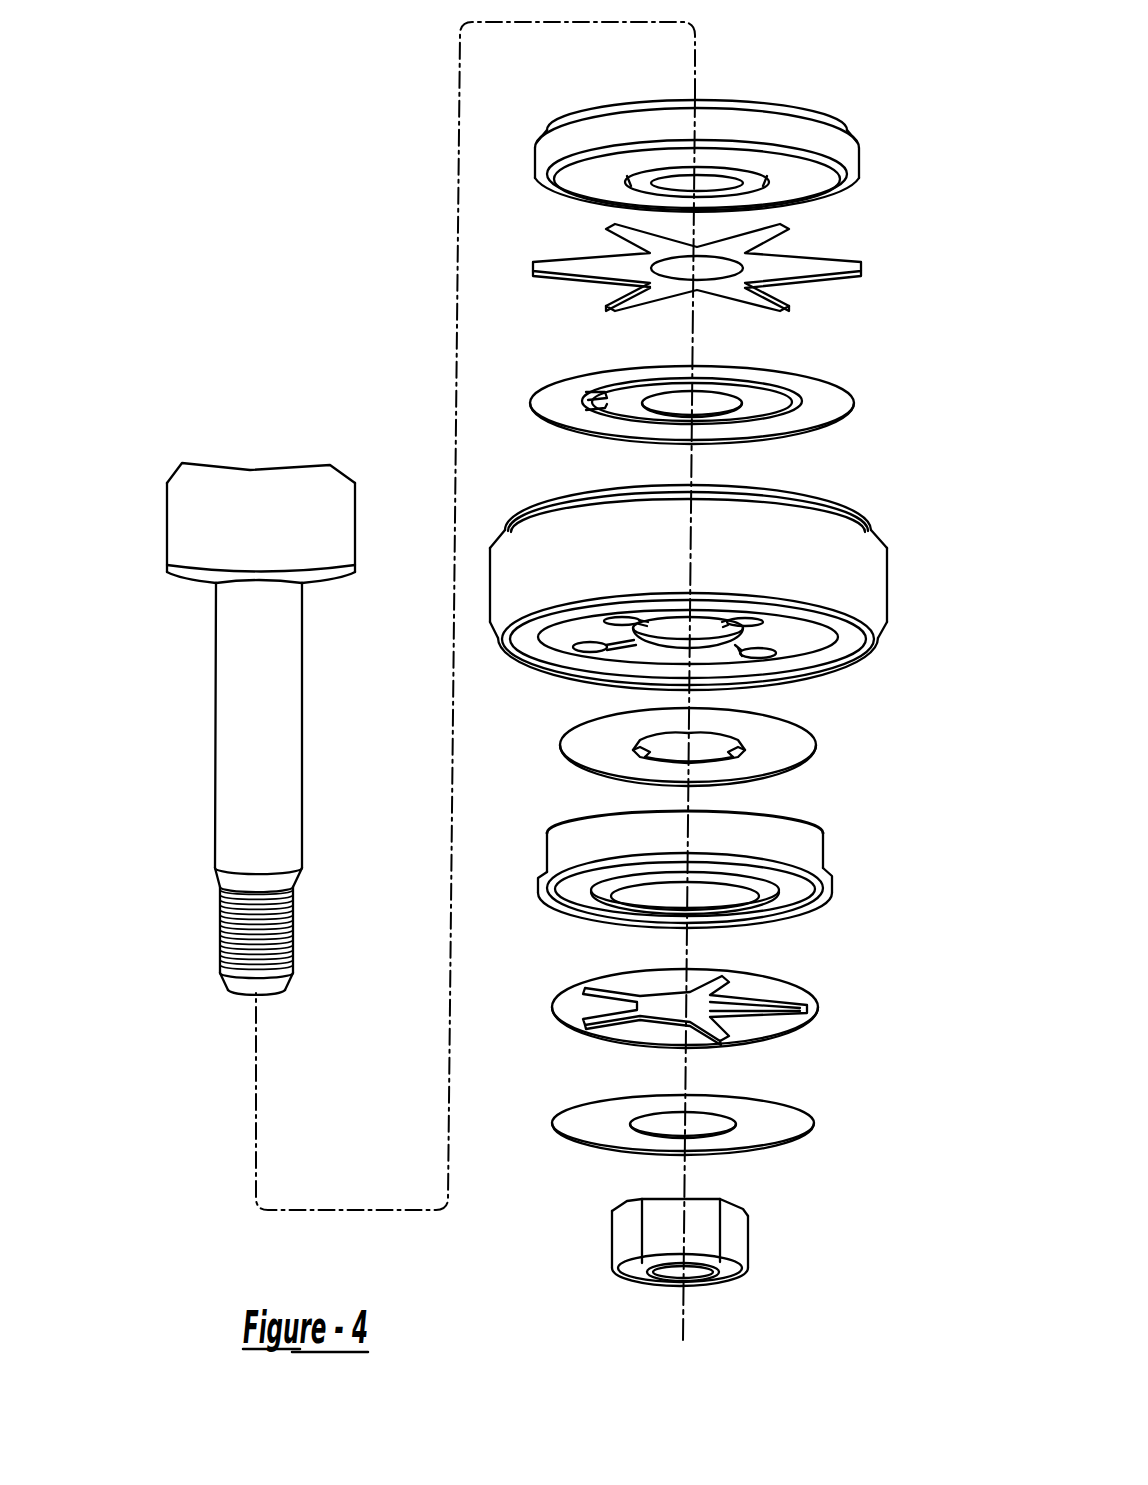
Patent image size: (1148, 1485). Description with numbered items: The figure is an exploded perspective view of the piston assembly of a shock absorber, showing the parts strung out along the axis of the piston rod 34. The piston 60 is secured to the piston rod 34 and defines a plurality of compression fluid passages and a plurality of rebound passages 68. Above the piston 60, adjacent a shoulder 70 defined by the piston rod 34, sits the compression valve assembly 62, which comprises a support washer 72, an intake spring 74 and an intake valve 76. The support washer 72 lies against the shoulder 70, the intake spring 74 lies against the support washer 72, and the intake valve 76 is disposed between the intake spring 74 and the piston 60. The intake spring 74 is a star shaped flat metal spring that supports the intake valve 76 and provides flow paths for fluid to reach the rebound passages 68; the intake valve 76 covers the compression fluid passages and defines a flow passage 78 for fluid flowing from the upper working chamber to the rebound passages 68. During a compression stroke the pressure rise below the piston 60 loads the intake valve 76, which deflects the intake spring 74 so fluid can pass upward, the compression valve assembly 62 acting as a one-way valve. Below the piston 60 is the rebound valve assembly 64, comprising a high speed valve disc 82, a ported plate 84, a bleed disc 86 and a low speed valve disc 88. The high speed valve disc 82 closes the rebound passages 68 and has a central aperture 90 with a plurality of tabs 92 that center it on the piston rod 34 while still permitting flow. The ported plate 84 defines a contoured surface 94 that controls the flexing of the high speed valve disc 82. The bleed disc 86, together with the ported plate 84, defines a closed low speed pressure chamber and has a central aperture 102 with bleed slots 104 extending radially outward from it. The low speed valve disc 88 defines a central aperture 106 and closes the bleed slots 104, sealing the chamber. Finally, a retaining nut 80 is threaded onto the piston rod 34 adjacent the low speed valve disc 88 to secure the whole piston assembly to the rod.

The piston rod 34 is at (285, 530).
The shoulder 70 is at (198, 583).
The compression valve assembly 62 is at (492, 310).
The support washer 72 is at (538, 148).
The intake spring 74 is at (545, 262).
The intake valve 76 is at (540, 405).
The flow passage 78 is at (803, 408).
The piston 60 is at (866, 586).
The rebound passages 68 is at (795, 664).
The rebound valve assembly 64 is at (572, 947).
The high speed valve disc 82 is at (795, 748).
The central aperture 90 is at (656, 733).
The tabs 92 is at (646, 752).
The ported plate 84 is at (818, 853).
The contoured surface 94 is at (760, 815).
The bleed disc 86 is at (787, 1022).
The central aperture 102 is at (560, 1020).
The bleed slots 104 is at (760, 978).
The low speed valve disc 88 is at (780, 1135).
The central aperture 106 is at (660, 1130).
The retaining nut 80 is at (737, 1243).